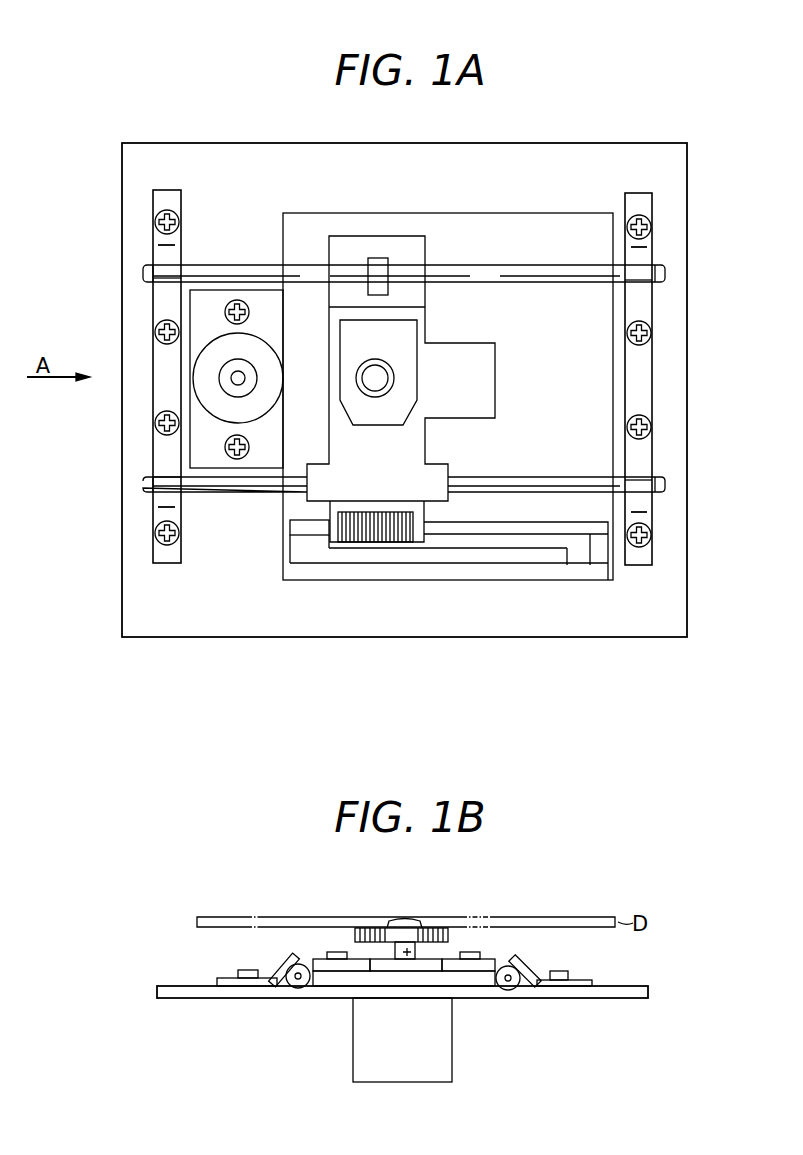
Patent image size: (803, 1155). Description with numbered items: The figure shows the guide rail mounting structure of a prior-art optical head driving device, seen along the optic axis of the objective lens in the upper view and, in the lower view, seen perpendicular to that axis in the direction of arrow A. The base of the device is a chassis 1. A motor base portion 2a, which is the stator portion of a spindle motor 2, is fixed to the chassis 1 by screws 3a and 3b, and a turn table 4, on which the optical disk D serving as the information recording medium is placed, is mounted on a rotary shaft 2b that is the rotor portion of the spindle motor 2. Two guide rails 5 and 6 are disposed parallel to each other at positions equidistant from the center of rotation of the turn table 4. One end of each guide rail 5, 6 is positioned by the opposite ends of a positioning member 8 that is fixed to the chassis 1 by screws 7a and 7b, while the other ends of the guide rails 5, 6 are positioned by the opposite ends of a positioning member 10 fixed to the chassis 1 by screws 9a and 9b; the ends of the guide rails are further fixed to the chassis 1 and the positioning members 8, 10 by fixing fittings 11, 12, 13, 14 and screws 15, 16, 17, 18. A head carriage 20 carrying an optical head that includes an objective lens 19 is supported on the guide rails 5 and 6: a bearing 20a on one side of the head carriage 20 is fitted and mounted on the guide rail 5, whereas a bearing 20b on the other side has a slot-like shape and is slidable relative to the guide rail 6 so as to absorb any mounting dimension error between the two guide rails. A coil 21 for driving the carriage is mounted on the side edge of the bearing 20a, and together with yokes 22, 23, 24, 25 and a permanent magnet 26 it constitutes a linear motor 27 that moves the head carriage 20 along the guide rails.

In FIG. 1A, the chassis 1 is at (681, 625).
In FIG. 1B, the chassis 1 is at (192, 998).
In FIG. 1B, the spindle motor 2 is at (420, 1082).
In FIG. 1A, the motor base portion 2a is at (205, 325).
In FIG. 1B, the motor base portion 2a is at (365, 959).
In FIG. 1A, the rotary shaft 2b is at (231, 380).
In FIG. 1B, the rotary shaft 2b is at (425, 921).
In FIG. 1A, the screw 3a is at (237, 460).
In FIG. 1B, the screw 3a is at (477, 951).
In FIG. 1A, the screw 3b is at (238, 300).
In FIG. 1B, the screw 3b is at (336, 951).
In FIG. 1A, the turn table 4 is at (210, 392).
In FIG. 1B, the turn table 4 is at (380, 928).
In FIG. 1A, the guide rail 5 is at (493, 490).
In FIG. 1B, the guide rail 5 is at (510, 990).
In FIG. 1A, the guide rail 6 is at (549, 270).
In FIG. 1B, the guide rail 6 is at (298, 989).
In FIG. 1A, the screw 7a is at (158, 430).
In FIG. 1B, the screw 7a is at (460, 972).
In FIG. 1A, the screw 7b is at (155, 329).
In FIG. 1B, the screw 7b is at (352, 971).
In FIG. 1A, the positioning member 8 is at (156, 362).
In FIG. 1B, the positioning member 8 is at (410, 986).
In FIG. 1A, the screw 9a is at (653, 424).
In FIG. 1A, the screw 9b is at (653, 330).
In FIG. 1A, the positioning member 10 is at (653, 378).
In FIG. 1A, the fixing fitting 11 is at (165, 565).
In FIG. 1B, the fixing fitting 11 is at (527, 966).
In FIG. 1A, the fixing fitting 12 is at (165, 195).
In FIG. 1B, the fixing fitting 12 is at (278, 972).
In FIG. 1A, the fixing fitting 13 is at (653, 520).
In FIG. 1A, the fixing fitting 14 is at (653, 266).
In FIG. 1A, the screw 15 is at (156, 540).
In FIG. 1B, the screw 15 is at (569, 974).
In FIG. 1A, the screw 16 is at (156, 216).
In FIG. 1B, the screw 16 is at (237, 973).
In FIG. 1A, the screw 17 is at (653, 556).
In FIG. 1A, the screw 18 is at (652, 221).
In FIG. 1A, the objective lens 19 is at (395, 378).
In FIG. 1A, the head carriage 20 is at (412, 292).
In FIG. 1A, the bearing 20a is at (368, 502).
In FIG. 1A, the bearing 20b is at (377, 258).
In FIG. 1A, the coil 21 is at (398, 545).
In FIG. 1A, the yoke 22 is at (298, 563).
In FIG. 1A, the yoke 23 is at (592, 522).
In FIG. 1A, the yoke 24 is at (600, 562).
In FIG. 1A, the yoke 25 is at (578, 573).
In FIG. 1A, the permanent magnet 26 is at (518, 565).
In FIG. 1A, the linear motor 27 is at (438, 553).